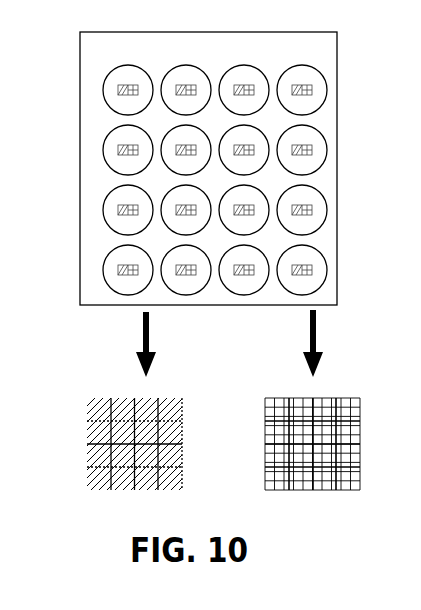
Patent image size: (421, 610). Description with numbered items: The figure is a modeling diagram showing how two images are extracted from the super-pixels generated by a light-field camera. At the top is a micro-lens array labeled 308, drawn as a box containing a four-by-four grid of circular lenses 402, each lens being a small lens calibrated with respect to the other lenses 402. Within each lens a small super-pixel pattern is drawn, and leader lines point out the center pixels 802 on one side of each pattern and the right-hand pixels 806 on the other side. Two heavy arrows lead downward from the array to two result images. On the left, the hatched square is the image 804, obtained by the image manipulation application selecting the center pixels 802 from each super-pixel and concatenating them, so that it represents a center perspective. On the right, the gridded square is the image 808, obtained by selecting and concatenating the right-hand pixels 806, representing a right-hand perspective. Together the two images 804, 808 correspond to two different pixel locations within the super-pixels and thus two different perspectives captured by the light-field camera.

The sensor 308 is at (267, 56).
The lenses 402 is at (103, 101).
The center pixels 802 is at (299, 99).
The right-hand pixels 806 is at (313, 158).
The image 804 is at (120, 387).
The image 808 is at (297, 387).